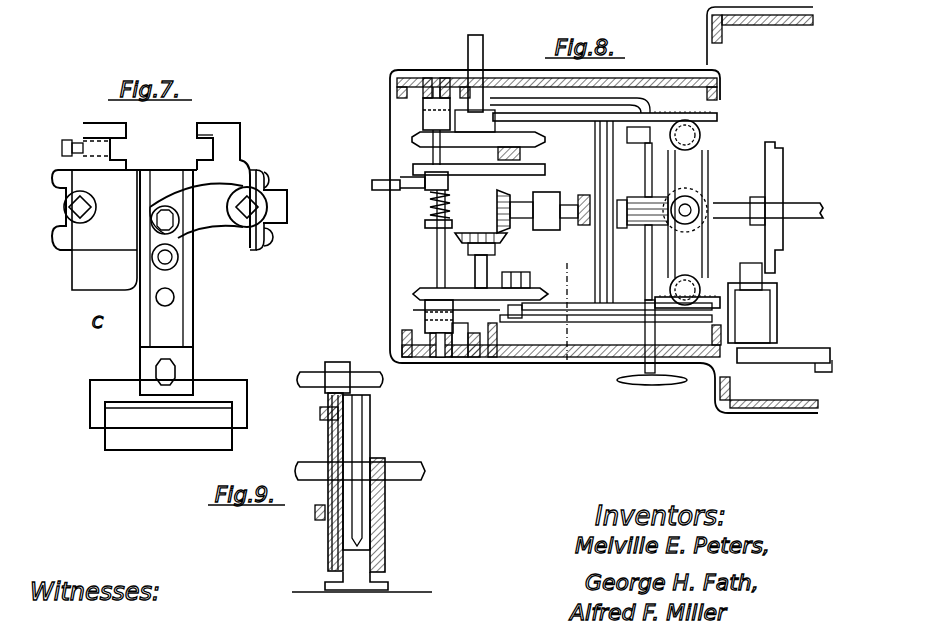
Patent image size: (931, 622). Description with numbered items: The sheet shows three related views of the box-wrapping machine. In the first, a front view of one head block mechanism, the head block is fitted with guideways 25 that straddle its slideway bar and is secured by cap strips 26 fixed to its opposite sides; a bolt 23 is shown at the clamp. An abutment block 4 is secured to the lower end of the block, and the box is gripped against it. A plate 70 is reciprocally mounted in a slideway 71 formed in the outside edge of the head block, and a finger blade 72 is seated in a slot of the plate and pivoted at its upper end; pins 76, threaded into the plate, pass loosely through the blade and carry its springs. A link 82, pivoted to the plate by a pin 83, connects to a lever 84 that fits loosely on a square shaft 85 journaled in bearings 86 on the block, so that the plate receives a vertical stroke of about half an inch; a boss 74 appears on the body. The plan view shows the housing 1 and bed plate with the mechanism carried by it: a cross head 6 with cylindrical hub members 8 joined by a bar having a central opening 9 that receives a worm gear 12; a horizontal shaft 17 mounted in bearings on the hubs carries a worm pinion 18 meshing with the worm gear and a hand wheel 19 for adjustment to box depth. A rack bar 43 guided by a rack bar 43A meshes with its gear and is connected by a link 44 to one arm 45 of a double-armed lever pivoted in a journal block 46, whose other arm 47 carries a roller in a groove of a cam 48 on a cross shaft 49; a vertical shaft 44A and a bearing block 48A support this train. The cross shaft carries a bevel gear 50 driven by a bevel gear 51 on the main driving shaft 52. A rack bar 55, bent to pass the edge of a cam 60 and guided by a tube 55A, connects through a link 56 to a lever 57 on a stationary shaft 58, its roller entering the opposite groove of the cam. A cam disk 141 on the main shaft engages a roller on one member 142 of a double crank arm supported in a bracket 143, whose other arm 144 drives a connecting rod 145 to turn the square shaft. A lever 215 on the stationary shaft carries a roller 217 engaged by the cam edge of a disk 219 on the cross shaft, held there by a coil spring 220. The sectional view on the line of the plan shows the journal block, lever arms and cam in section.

In FIG. 8, the housing 1 is at (777, 55).
In FIG. 7, the abutment block 4 is at (133, 437).
In FIG. 8, the cross head 6 is at (700, 250).
In FIG. 8, the cylindrical hub members 8 is at (700, 138).
In FIG. 8, the central opening 9 is at (715, 182).
In FIG. 8, the worm gear 12 is at (703, 210).
In FIG. 8, the horizontal shaft 17 is at (647, 166).
In FIG. 8, the worm pinion 18 is at (636, 226).
In FIG. 8, the hand wheel 19 is at (655, 386).
In FIG. 7, the bolt 23 is at (62, 147).
In FIG. 7, the guideways 25 is at (110, 145).
In FIG. 7, the cap strips 26 is at (95, 125).
In FIG. 9, the rack bar 43 is at (330, 420).
In FIG. 8, the rack bar 43 is at (665, 310).
In FIG. 8, the rack bar 43A is at (660, 113).
In FIG. 9, the link 44 is at (320, 414).
In FIG. 8, the link 44 is at (540, 323).
In FIG. 8, the shaft 44A is at (530, 112).
In FIG. 9, the arm of double armed lever 45 is at (330, 530).
In FIG. 8, the arm of double armed lever 45 is at (514, 320).
In FIG. 9, the journal block 46 is at (358, 584).
In FIG. 9, the arm of double armed lever 47 is at (385, 518).
In FIG. 8, the arm of double armed lever 47 is at (516, 272).
In FIG. 9, the cam 48 is at (370, 425).
In FIG. 8, the cam 48 is at (413, 294).
In FIG. 8, the bearing block 48A is at (422, 143).
In FIG. 9, the cross shaft 49 is at (416, 468).
In FIG. 8, the cross shaft 49 is at (475, 270).
In FIG. 8, the bevel gear 50 is at (455, 240).
In FIG. 8, the bevel gear 51 is at (512, 198).
In FIG. 8, the main driving shaft 52 is at (800, 205).
In FIG. 9, the rack bar 55 is at (315, 512).
In FIG. 8, the rack bar 55 is at (578, 323).
In FIG. 8, the guide tube 55A is at (615, 100).
In FIG. 8, the link 56 is at (460, 357).
In FIG. 9, the lever 57 is at (328, 394).
In FIG. 8, the lever 57 is at (425, 318).
In FIG. 9, the stationary shaft 58 is at (309, 376).
In FIG. 8, the stationary shaft 58 is at (432, 233).
In FIG. 8, the cam 60 is at (598, 170).
In FIG. 7, the plate 70 is at (193, 336).
In FIG. 7, the slideway 71 is at (158, 184).
In FIG. 7, the finger blade 72 is at (165, 319).
In FIG. 7, the boss 74 is at (66, 208).
In FIG. 7, the pins 76 is at (176, 296).
In FIG. 7, the link 82 is at (178, 236).
In FIG. 7, the pin 83 is at (178, 259).
In FIG. 7, the lever 84 is at (196, 211).
In FIG. 7, the square shaft 85 is at (270, 196).
In FIG. 7, the bearings 86 is at (258, 172).
In FIG. 8, the cam disk 141 is at (783, 244).
In FIG. 8, the member of double crank arm 142 is at (750, 263).
In FIG. 8, the bracket 143 is at (755, 321).
In FIG. 8, the arm 144 is at (772, 363).
In FIG. 8, the connecting rod 145 is at (813, 375).
In FIG. 8, the lever 215 is at (397, 180).
In FIG. 8, the roller 217 is at (415, 140).
In FIG. 8, the disk 219 is at (545, 166).
In FIG. 8, the coil spring 220 is at (428, 206).